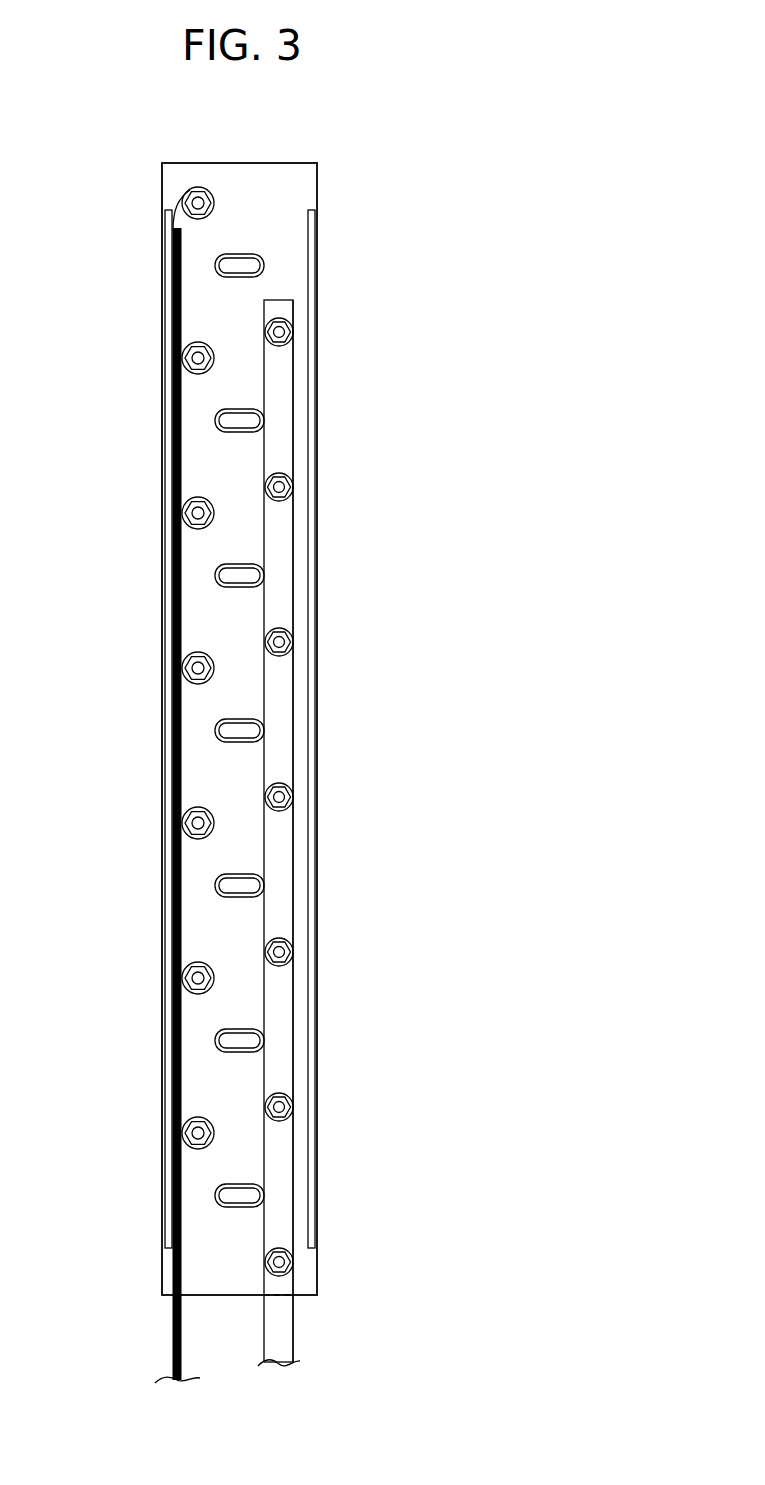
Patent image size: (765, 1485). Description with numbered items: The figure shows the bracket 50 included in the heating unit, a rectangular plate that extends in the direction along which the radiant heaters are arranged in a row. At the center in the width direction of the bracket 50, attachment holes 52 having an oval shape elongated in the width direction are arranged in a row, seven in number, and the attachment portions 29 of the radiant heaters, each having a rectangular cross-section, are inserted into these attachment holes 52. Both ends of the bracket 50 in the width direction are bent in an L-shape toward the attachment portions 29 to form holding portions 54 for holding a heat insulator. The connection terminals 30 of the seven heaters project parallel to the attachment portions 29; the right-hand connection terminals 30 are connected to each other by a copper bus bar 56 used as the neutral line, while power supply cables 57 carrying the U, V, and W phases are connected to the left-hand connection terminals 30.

The bracket 50 is at (465, 105).
The holding portions 54 is at (167, 281).
The attachment holes 52 is at (262, 423).
The bus bar 56 is at (283, 850).
The power supply cables 57 is at (173, 1318).
The attachment portion 29 is at (233, 418).
The connection terminals 30 is at (198, 358).